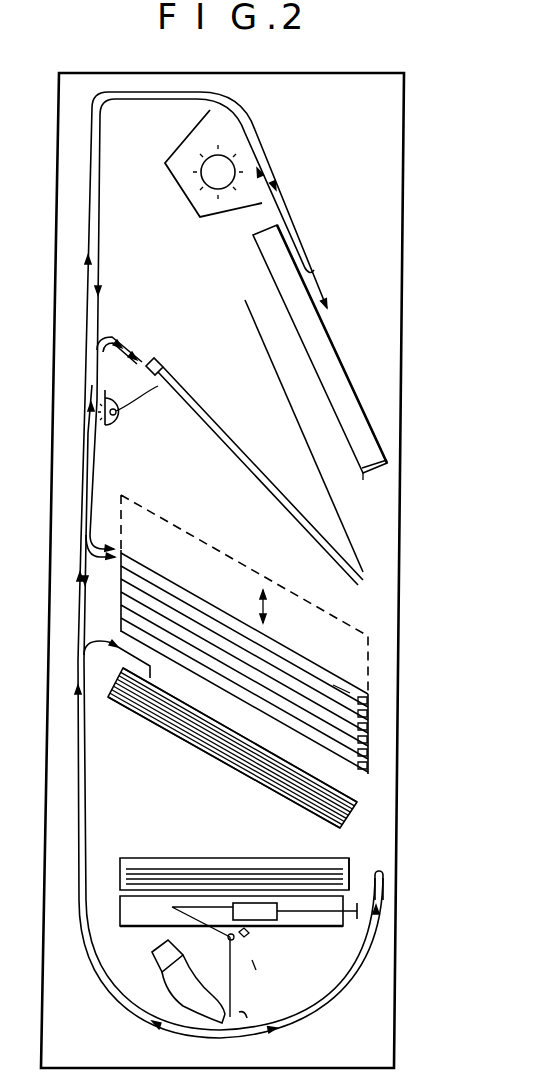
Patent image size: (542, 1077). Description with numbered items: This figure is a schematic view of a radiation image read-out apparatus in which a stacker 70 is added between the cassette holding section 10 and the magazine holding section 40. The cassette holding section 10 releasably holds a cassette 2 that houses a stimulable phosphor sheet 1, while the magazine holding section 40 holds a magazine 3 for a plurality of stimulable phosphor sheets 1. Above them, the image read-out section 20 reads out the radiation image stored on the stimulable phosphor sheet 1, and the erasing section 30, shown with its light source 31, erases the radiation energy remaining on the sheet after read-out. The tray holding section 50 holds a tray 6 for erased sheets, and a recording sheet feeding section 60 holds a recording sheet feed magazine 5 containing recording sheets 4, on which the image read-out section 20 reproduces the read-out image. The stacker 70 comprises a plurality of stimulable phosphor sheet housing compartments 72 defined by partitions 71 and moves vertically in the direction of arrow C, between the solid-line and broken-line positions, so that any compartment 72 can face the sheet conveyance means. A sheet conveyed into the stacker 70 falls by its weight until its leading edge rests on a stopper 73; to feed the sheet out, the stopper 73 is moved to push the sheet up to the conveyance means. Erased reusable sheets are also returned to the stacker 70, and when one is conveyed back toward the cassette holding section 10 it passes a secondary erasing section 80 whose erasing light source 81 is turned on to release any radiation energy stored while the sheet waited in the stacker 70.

The stimulable phosphor sheet 1 is at (250, 723).
The cassette 2 is at (254, 471).
The magazine 3 is at (221, 762).
The recording sheet 4 is at (231, 870).
The recording sheet feed magazine 5 is at (350, 868).
The tray 6 is at (378, 467).
The cassette holding section 10 is at (372, 526).
The image read-out section 20 is at (248, 970).
The erasing section 30 is at (197, 190).
The lamp 31 is at (190, 203).
The magazine holding section 40 is at (281, 737).
The tray holding section 50 is at (356, 355).
The recording sheet feeding section 60 is at (366, 870).
The stacker 70 is at (292, 634).
The partitions 71 is at (282, 650).
The stimulable phosphor sheet housing compartments 72 is at (309, 665).
The stopper 73 is at (370, 703).
The secondary erasing section 80 is at (130, 420).
The erasing light source 81 is at (165, 379).
The arrow C is at (272, 606).